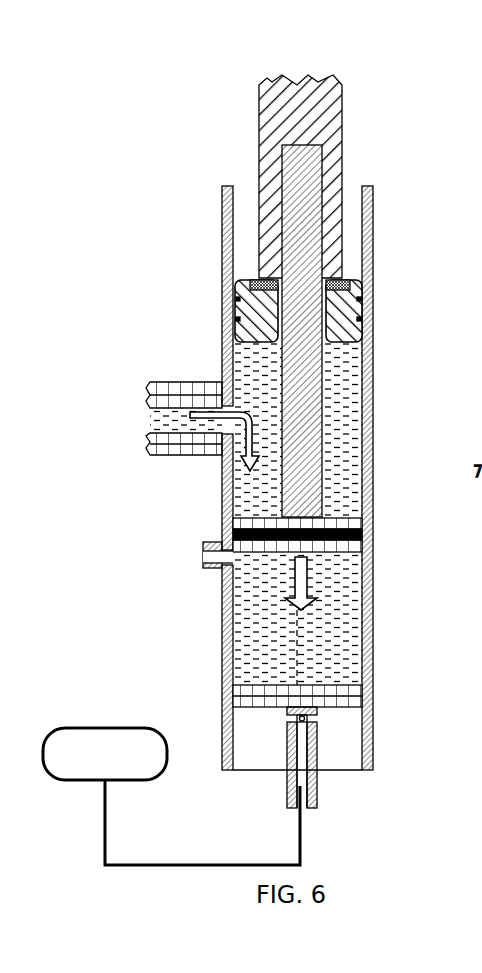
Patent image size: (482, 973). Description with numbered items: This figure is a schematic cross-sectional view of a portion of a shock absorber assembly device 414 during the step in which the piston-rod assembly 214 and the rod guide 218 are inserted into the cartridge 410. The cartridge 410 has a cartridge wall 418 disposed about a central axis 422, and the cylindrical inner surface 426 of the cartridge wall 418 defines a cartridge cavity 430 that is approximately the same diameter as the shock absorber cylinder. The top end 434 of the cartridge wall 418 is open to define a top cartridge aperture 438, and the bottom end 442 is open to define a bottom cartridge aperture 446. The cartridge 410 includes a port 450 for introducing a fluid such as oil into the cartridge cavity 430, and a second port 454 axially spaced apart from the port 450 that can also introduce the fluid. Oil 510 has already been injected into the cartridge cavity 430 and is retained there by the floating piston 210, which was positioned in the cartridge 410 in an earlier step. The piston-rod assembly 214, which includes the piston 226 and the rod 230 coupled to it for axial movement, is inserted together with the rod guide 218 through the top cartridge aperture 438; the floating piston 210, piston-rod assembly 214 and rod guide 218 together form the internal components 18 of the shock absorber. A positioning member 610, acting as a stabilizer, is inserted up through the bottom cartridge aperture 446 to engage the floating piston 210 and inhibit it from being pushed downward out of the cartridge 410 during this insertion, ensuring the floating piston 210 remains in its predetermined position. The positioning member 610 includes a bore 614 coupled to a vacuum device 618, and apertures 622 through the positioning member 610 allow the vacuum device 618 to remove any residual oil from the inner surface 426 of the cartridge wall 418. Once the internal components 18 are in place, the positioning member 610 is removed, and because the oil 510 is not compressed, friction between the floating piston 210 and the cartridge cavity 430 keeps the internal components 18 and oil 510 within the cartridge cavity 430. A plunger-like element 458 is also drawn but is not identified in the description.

The cartridge 410 is at (222, 262).
The shock absorber assembly device 414 is at (178, 182).
The cartridge wall 418 is at (223, 357).
The inner surface 426 is at (358, 206).
The top end 434 is at (365, 186).
The top cartridge aperture 438 is at (240, 186).
The plunger 458 is at (258, 108).
The rod 230 is at (322, 375).
The rod guide 218 is at (358, 305).
The internal components 18 is at (352, 270).
The piston-rod assembly 214 is at (325, 515).
The cartridge cavity 430 is at (347, 443).
The port 454 is at (205, 430).
The piston 226 is at (245, 525).
The port 450 is at (205, 562).
The oil 510 is at (342, 585).
The central axis 422 is at (300, 655).
The floating piston 210 is at (258, 693).
The apertures 622 is at (317, 720).
The bore 614 is at (308, 750).
The positioning member 610 is at (290, 792).
The bottom end 442 is at (230, 770).
The bottom cartridge aperture 446 is at (353, 771).
The vacuum device 618 is at (112, 728).